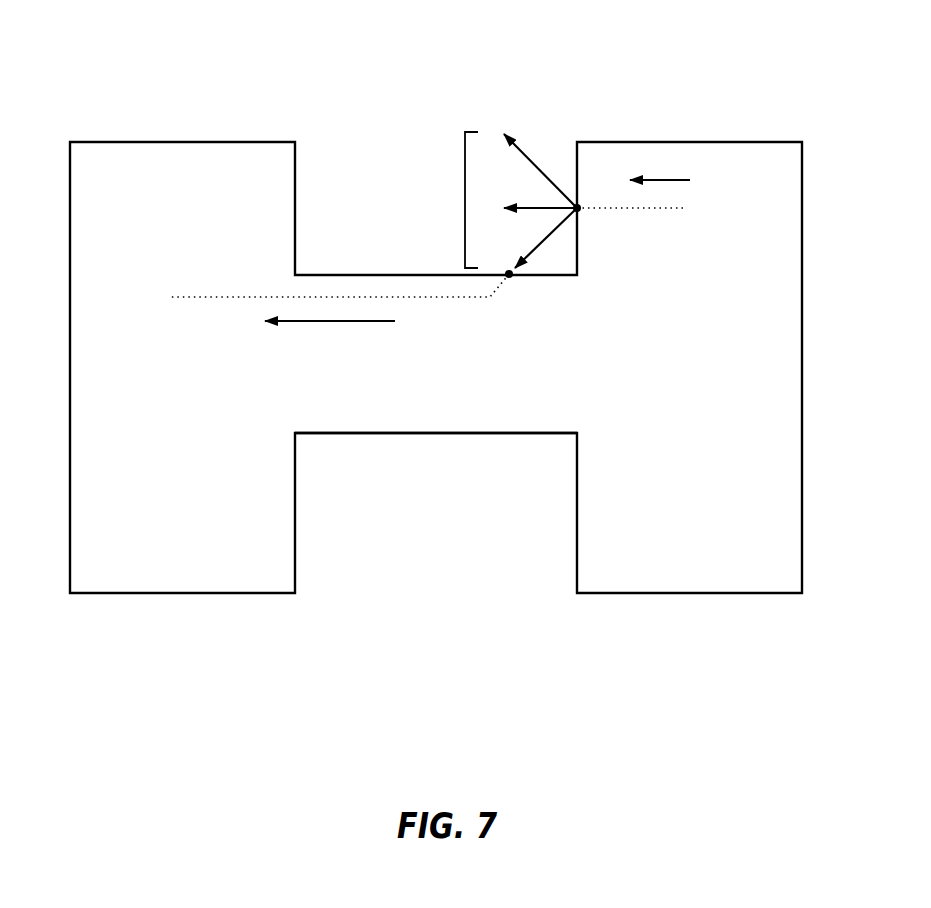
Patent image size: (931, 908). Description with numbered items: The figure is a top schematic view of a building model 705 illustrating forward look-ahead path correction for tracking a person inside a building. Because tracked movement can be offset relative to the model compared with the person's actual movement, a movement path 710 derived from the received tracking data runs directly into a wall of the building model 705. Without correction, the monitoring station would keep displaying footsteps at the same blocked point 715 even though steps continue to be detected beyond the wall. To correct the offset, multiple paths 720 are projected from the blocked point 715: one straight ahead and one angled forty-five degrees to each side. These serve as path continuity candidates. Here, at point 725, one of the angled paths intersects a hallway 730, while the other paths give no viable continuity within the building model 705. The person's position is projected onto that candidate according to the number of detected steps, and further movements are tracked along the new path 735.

The building model 705 is at (153, 142).
The movement path 710 is at (637, 208).
The blocked point 715 is at (576, 203).
The multiple paths 720 is at (465, 208).
The point 725 is at (509, 274).
The hallway 730 is at (465, 433).
The new path 735 is at (220, 297).